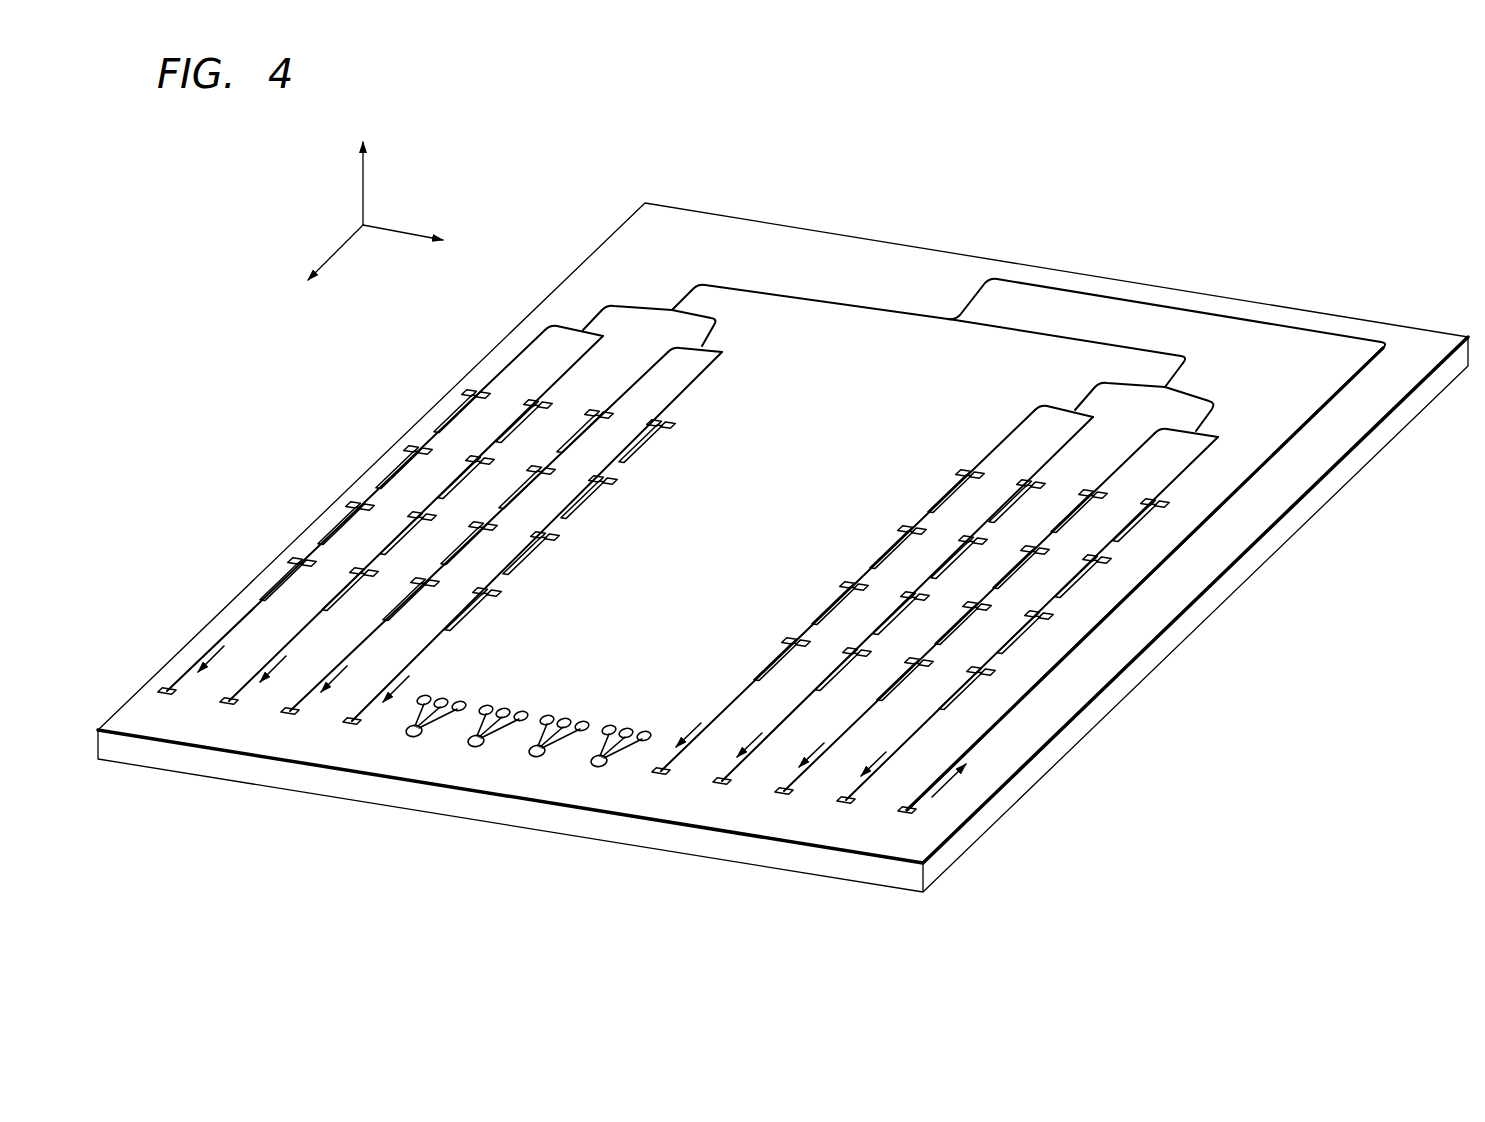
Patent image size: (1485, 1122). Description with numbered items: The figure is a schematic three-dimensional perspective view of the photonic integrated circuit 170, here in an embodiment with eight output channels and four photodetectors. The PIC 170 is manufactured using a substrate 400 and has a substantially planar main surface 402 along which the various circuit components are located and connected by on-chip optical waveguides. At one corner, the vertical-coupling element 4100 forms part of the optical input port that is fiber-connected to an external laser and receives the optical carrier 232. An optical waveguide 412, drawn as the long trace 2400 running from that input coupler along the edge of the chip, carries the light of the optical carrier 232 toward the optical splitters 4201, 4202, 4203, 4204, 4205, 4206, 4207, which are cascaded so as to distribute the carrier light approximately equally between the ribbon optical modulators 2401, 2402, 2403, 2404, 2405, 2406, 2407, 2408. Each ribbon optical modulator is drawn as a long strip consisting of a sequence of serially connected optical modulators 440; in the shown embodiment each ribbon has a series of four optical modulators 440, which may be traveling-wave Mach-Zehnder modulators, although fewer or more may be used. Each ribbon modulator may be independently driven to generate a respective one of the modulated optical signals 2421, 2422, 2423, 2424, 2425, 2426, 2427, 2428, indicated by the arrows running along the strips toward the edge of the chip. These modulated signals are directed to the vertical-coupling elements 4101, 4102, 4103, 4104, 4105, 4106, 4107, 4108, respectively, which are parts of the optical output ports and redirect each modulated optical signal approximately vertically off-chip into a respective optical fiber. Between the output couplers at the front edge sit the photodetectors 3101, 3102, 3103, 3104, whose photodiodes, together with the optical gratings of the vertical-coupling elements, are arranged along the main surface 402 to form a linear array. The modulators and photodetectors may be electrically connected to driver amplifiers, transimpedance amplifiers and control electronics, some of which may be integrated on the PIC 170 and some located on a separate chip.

The photonic integrated circuit 170 is at (241, 138).
The substrate 400 is at (1241, 553).
The main surface 402 is at (712, 231).
The optical waveguide 412 is at (1104, 626).
The optical carrier 232 is at (951, 783).
The trace 2400 is at (1145, 579).
The ribbon optical modulator 2401 is at (1153, 487).
The ribbon optical modulator 2402 is at (1103, 460).
The ribbon optical modulator 2403 is at (1056, 443).
The ribbon optical modulator 2404 is at (970, 453).
The ribbon optical modulator 2405 is at (659, 407).
The ribbon optical modulator 2406 is at (605, 384).
The ribbon optical modulator 2407 is at (540, 386).
The ribbon optical modulator 2408 is at (490, 375).
The modulated optical signal 2421 is at (878, 766).
The modulated optical signal 2422 is at (811, 755).
The modulated optical signal 2423 is at (749, 745).
The modulated optical signal 2424 is at (688, 738).
The modulated optical signal 2425 is at (416, 694).
The modulated optical signal 2426 is at (334, 679).
The modulated optical signal 2427 is at (273, 669).
The modulated optical signal 2428 is at (220, 656).
The photodetector 3101 is at (596, 766).
The photodetector 3102 is at (534, 756).
The photodetector 3103 is at (473, 746).
The photodetector 3104 is at (411, 736).
The vertical-coupling element 4100 is at (907, 814).
The vertical-coupling element 4101 is at (846, 804).
The vertical-coupling element 4102 is at (784, 795).
The vertical-coupling element 4103 is at (722, 785).
The vertical-coupling element 4104 is at (661, 775).
The vertical-coupling element 4105 is at (352, 725).
The vertical-coupling element 4106 is at (290, 715).
The vertical-coupling element 4107 is at (229, 705).
The vertical-coupling element 4108 is at (167, 695).
The optical splitter 4201 is at (979, 311).
The optical splitter 4202 is at (1199, 378).
The optical splitter 4203 is at (703, 297).
The optical splitter 4204 is at (1223, 424).
The optical splitter 4205 is at (1071, 389).
The optical splitter 4206 is at (725, 340).
The optical splitter 4207 is at (580, 305).
The optical modulator 440 is at (648, 446).